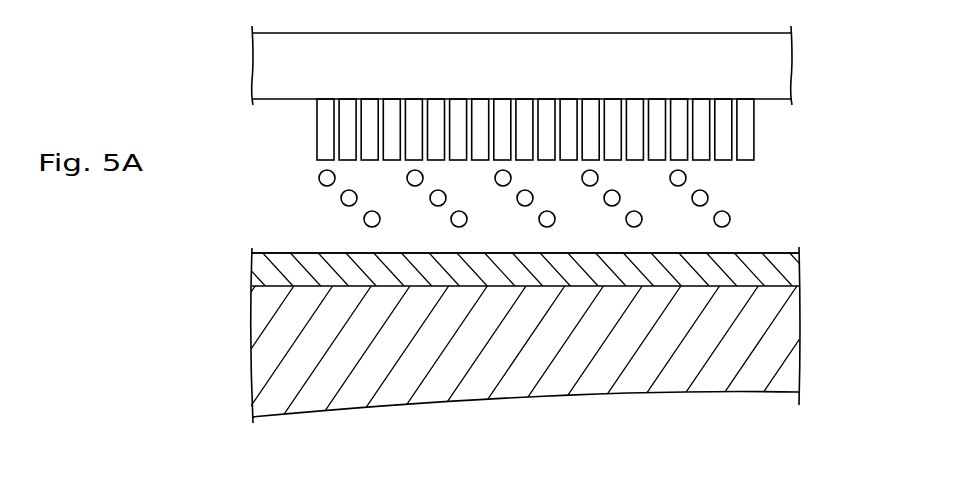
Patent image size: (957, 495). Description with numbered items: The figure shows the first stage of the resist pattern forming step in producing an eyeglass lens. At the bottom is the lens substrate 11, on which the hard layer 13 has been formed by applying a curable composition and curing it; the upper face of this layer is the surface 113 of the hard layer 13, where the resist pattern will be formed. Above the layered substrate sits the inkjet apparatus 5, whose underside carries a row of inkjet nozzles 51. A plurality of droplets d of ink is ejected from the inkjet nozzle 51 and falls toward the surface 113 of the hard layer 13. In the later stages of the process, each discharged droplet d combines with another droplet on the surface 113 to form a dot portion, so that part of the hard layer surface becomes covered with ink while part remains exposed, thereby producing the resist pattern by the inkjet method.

The inkjet apparatus 5 is at (780, 62).
The inkjet nozzle 51 is at (754, 130).
The droplets d is at (730, 215).
The hard layer 13 is at (799, 268).
The lens substrate 11 is at (799, 330).
The surface of the hard layer 113 is at (290, 256).